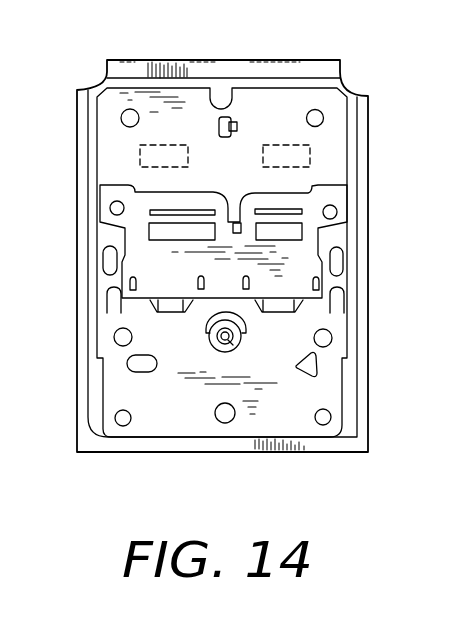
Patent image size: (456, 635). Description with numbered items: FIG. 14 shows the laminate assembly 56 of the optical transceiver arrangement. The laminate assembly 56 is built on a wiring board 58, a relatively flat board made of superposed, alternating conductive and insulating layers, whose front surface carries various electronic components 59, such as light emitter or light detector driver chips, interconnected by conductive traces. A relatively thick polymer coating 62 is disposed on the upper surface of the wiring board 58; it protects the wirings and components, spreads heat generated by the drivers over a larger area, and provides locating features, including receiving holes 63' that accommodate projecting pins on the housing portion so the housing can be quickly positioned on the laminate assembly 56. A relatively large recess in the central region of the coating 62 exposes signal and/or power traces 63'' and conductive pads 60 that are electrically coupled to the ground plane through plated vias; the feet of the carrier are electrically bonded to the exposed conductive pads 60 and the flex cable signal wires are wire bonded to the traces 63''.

The laminate assembly 56 is at (377, 245).
The wiring board 58 is at (358, 440).
The electronic components 59 is at (218, 128).
The conductive pads 60 is at (296, 232).
The polymer coating 62 is at (325, 388).
The receiving holes 63' is at (229, 428).
The signal and/or power traces 63'' is at (290, 179).